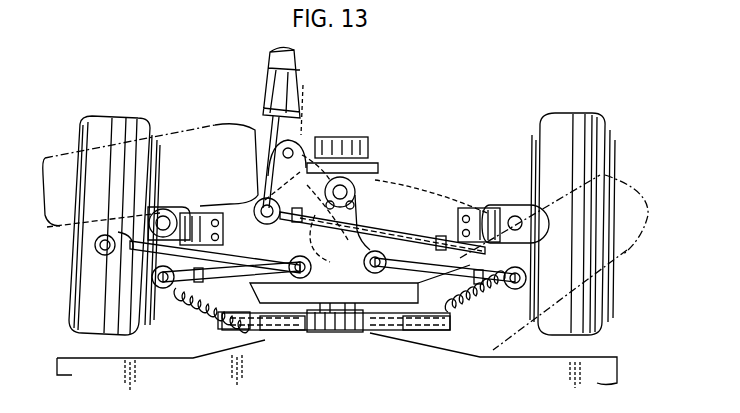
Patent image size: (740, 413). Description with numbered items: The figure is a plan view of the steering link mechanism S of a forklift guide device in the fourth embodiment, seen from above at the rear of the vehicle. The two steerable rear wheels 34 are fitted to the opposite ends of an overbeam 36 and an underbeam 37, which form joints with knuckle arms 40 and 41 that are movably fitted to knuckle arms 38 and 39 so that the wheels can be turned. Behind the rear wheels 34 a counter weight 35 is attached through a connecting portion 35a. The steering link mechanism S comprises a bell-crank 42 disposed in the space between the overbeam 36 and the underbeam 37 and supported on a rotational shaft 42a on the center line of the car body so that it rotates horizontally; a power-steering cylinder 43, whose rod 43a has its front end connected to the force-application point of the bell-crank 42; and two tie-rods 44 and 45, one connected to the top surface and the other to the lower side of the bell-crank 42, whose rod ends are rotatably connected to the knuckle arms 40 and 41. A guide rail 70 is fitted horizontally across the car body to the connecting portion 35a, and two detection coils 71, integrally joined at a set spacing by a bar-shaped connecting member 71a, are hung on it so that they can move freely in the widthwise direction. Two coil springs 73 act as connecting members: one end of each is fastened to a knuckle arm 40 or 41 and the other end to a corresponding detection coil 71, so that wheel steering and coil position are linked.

The rear wheels 34 is at (100, 122).
The counter weight 35 is at (622, 373).
The connecting portion 35a is at (343, 333).
The overbeam 36 is at (243, 200).
The underbeam 37 is at (425, 200).
The knuckle arm 38 is at (165, 203).
The knuckle arm 39 is at (515, 215).
The knuckle arm 40 is at (103, 247).
The knuckle arm 41 is at (525, 287).
The bell-crank 42 is at (303, 150).
The rotational shaft 42a is at (368, 163).
The power-steering cylinder 43 is at (270, 85).
The rod 43a is at (268, 152).
The tie-rod 44 is at (240, 323).
The tie-rod 45 is at (415, 210).
The guide rail 70 is at (440, 333).
The detection coils 71 is at (273, 327).
The connecting member 71a is at (300, 333).
The coil springs 73 is at (190, 295).
The steering link mechanism S is at (377, 198).